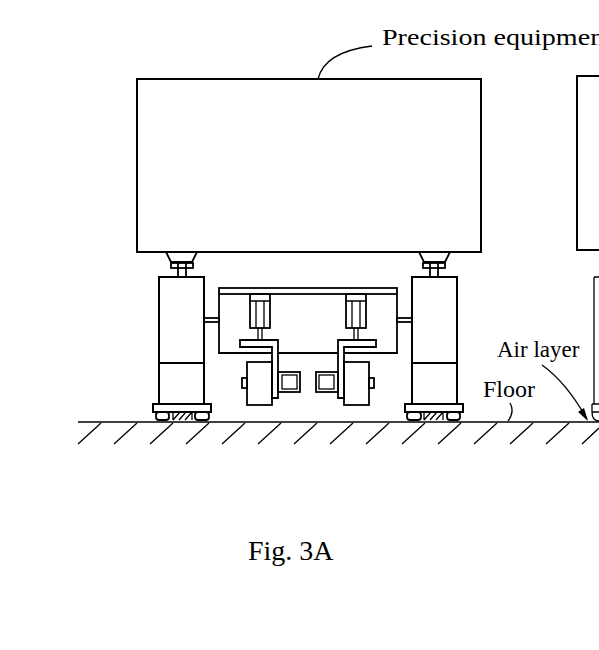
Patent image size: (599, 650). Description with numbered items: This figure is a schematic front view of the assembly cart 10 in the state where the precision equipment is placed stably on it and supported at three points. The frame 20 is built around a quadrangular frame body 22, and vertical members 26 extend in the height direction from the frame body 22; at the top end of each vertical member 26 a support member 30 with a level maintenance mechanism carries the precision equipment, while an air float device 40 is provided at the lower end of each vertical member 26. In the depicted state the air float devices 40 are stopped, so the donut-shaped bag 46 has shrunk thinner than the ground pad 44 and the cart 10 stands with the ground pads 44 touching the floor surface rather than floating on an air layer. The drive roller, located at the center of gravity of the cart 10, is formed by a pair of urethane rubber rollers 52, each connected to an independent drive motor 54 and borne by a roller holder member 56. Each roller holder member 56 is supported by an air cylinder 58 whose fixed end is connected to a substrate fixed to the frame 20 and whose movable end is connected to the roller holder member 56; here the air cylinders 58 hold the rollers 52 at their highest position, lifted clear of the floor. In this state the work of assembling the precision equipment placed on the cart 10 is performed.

The cart 10 is at (150, 312).
The frame 20 is at (458, 312).
The vertical member 26 is at (385, 303).
The frame body 22 is at (407, 327).
The support member 30 is at (447, 258).
The air float device 40 is at (141, 399).
The ground pad 44 is at (187, 422).
The donut-shaped bag 46 is at (160, 422).
The roller 52 is at (255, 406).
The drive motor 54 is at (288, 393).
The roller holder member 56 is at (277, 340).
The air cylinder 58 is at (272, 316).